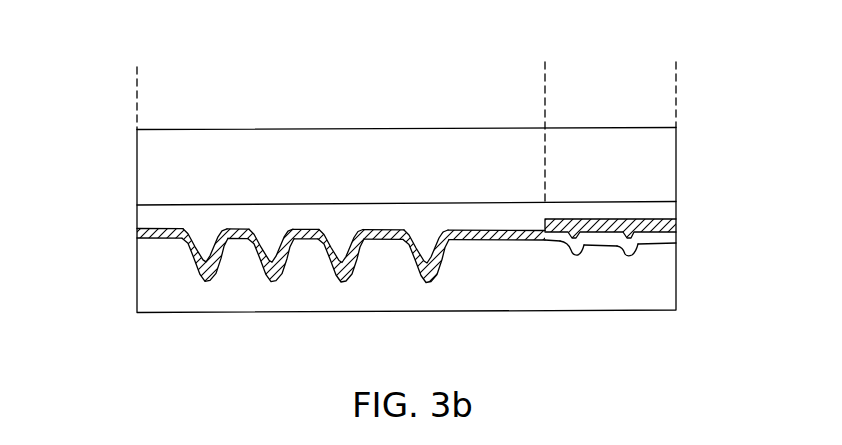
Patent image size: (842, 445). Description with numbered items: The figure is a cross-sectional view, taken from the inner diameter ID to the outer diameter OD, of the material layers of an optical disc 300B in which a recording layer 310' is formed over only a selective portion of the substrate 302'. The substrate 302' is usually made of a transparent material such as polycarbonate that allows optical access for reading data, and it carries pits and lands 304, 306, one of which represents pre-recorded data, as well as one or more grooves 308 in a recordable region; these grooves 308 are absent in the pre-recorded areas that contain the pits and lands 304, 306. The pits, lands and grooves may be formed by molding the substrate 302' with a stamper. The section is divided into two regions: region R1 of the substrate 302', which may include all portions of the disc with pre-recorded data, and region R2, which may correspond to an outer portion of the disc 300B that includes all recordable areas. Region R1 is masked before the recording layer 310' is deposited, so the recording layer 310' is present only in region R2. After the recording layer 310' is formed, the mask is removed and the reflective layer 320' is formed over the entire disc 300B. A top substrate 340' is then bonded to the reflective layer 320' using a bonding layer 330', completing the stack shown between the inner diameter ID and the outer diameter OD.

The disc 300B is at (116, 70).
The substrate 302' is at (449, 241).
The pits 304 is at (206, 284).
The lands 306 is at (391, 242).
The grooves 308 is at (625, 256).
The recording layer 310' is at (449, 256).
The reflective layer 320' is at (653, 216).
The bonding layer 330' is at (449, 187).
The top substrate 340' is at (449, 132).
The inner diameter ID is at (137, 210).
The outer diameter OD is at (676, 278).
The region R1 is at (149, 81).
The region R2 is at (664, 81).